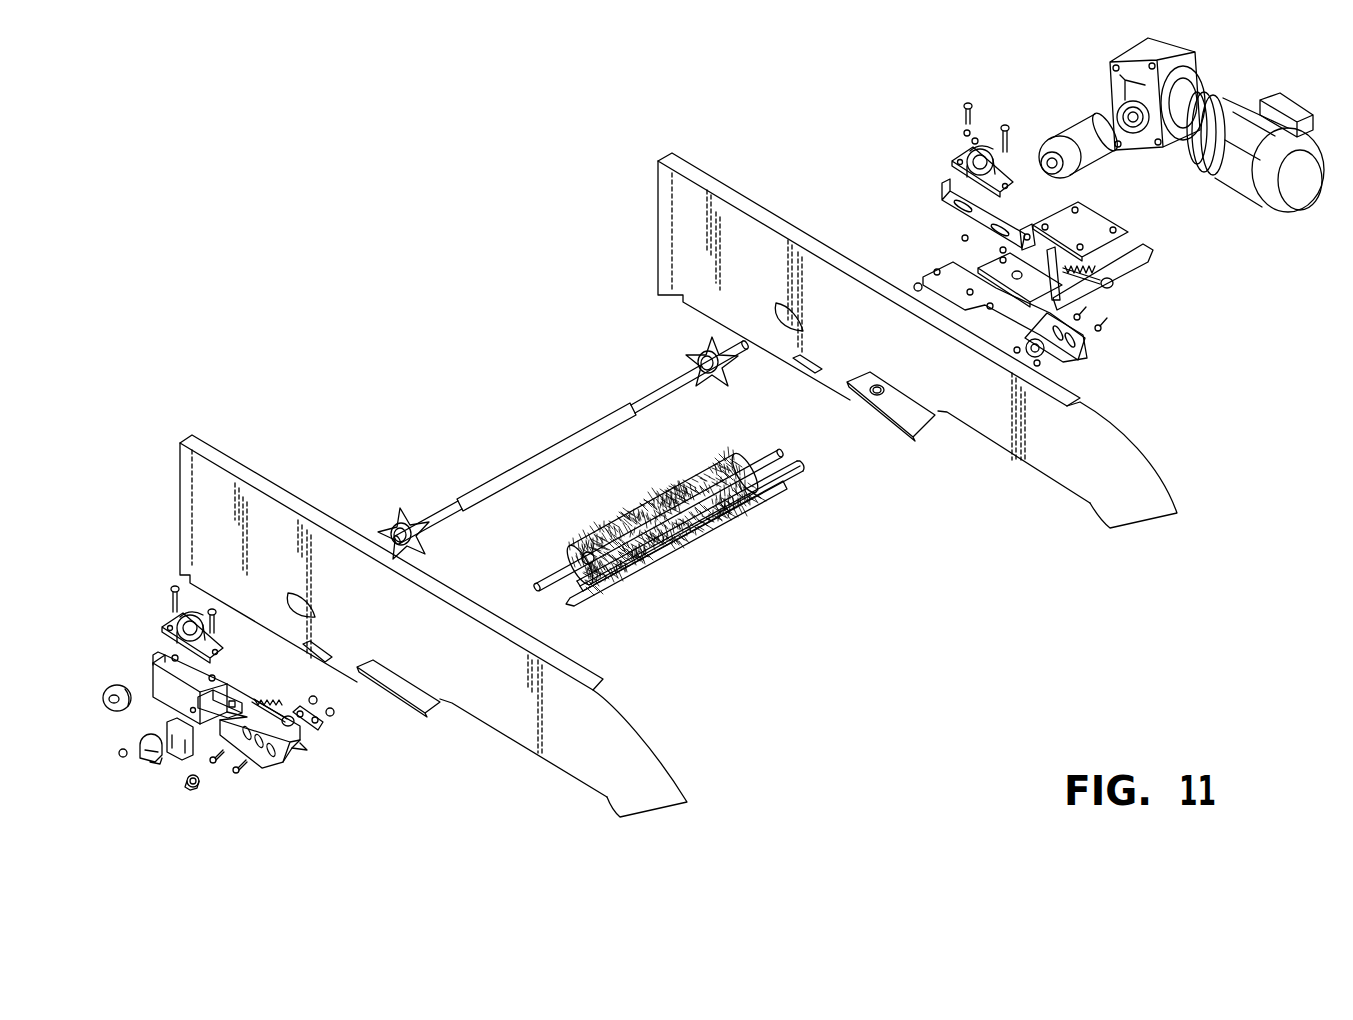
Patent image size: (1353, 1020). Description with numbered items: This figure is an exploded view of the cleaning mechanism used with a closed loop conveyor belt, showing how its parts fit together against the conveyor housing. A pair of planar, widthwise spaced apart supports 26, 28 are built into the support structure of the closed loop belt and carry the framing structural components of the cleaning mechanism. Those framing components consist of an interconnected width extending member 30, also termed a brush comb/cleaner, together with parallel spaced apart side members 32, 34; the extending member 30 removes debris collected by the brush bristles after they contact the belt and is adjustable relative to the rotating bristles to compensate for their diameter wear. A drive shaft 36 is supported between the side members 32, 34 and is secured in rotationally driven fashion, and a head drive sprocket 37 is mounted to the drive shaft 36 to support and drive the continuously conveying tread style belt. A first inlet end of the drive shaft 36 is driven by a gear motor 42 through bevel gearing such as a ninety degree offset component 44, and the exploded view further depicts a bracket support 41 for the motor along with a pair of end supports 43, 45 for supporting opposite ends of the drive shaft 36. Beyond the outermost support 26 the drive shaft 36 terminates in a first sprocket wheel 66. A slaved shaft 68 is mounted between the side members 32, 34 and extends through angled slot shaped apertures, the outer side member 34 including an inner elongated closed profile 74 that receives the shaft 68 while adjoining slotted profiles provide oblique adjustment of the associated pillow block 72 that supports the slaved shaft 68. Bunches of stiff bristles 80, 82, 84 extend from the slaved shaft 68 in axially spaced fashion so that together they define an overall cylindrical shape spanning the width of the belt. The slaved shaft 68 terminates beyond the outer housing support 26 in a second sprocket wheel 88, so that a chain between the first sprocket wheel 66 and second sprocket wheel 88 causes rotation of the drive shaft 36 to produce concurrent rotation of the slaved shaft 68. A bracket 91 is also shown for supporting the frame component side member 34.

The support 26 is at (488, 703).
The support 28 is at (982, 418).
The width extending member 30 is at (727, 529).
The side member 32 is at (995, 312).
The side member 34 is at (262, 760).
The drive shaft 36 is at (537, 450).
The head drive sprocket 37 is at (697, 362).
The bracket support 41 is at (1105, 222).
The gear motor 42 is at (1300, 190).
The end support 43 is at (955, 170).
The ninety degree offset component 44 is at (1075, 122).
The end support 45 is at (178, 622).
The first sprocket wheel 66 is at (106, 688).
The slaved shaft 68 is at (780, 456).
The pillow block 72 is at (323, 728).
The inner elongated closed profile 74 is at (1035, 352).
The bristles 80 is at (645, 565).
The bristles 82 is at (683, 523).
The bristles 84 is at (723, 493).
The second sprocket wheel 88 is at (193, 786).
The bracket 91 is at (146, 757).